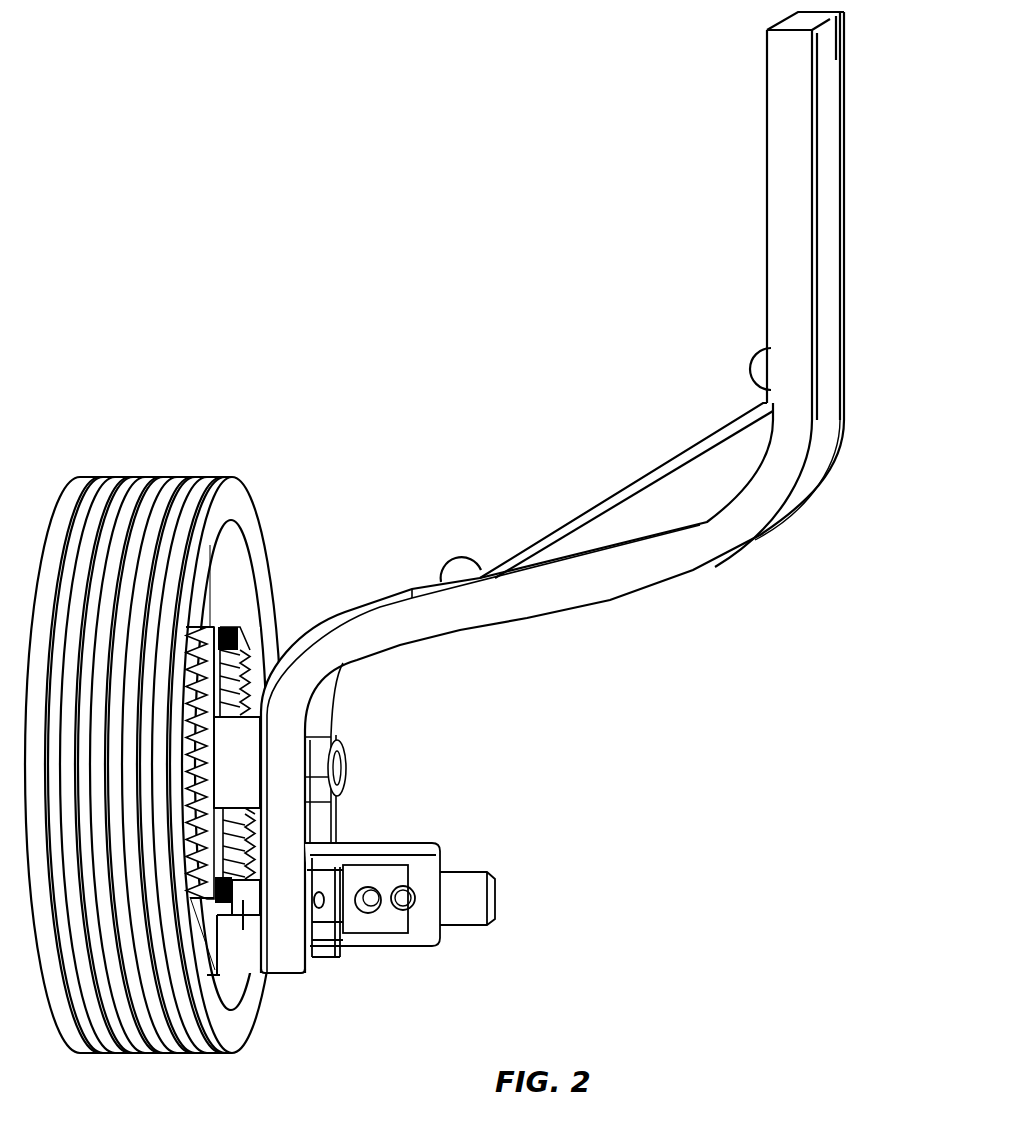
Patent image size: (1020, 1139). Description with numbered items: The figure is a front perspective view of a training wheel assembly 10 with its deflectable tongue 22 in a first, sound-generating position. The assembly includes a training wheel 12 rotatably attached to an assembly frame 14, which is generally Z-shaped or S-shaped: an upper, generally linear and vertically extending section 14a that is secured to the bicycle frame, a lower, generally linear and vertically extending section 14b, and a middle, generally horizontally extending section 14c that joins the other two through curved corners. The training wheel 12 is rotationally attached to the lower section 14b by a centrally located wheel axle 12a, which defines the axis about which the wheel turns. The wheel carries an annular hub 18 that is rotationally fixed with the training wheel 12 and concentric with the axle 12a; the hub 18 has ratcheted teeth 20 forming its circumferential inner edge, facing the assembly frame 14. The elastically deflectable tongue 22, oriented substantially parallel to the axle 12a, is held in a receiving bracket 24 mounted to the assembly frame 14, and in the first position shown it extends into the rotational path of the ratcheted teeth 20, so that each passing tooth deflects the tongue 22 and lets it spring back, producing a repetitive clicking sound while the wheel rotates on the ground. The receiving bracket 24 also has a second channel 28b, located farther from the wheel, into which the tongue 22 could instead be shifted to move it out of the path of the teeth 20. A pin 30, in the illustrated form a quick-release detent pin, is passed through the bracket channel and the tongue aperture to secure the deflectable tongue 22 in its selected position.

The training wheel assembly 10 is at (174, 370).
The training wheel 12 is at (121, 455).
The wheel axle 12a is at (243, 741).
The assembly frame 14 is at (593, 492).
The upper section 14a is at (851, 200).
The lower section 14b is at (348, 838).
The horizontal section 14c is at (537, 623).
The annular hub 18 is at (205, 622).
The ratcheted teeth 20 is at (240, 643).
The deflectable tongue 22 is at (243, 905).
The receiving bracket 24 is at (450, 826).
The second channel 28b is at (401, 906).
The pin 30 is at (365, 905).